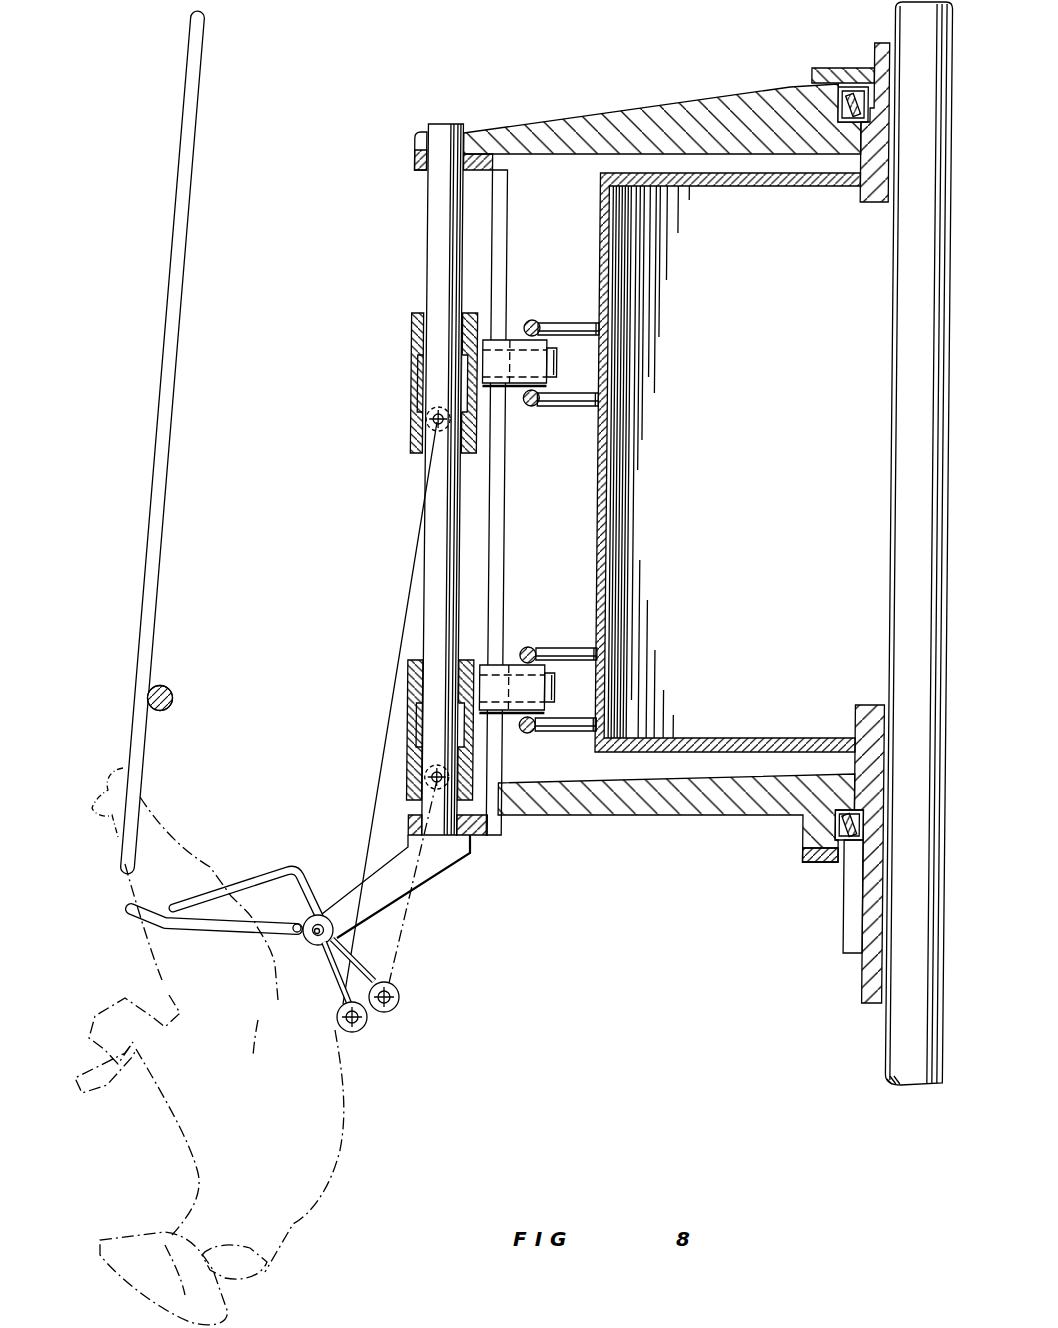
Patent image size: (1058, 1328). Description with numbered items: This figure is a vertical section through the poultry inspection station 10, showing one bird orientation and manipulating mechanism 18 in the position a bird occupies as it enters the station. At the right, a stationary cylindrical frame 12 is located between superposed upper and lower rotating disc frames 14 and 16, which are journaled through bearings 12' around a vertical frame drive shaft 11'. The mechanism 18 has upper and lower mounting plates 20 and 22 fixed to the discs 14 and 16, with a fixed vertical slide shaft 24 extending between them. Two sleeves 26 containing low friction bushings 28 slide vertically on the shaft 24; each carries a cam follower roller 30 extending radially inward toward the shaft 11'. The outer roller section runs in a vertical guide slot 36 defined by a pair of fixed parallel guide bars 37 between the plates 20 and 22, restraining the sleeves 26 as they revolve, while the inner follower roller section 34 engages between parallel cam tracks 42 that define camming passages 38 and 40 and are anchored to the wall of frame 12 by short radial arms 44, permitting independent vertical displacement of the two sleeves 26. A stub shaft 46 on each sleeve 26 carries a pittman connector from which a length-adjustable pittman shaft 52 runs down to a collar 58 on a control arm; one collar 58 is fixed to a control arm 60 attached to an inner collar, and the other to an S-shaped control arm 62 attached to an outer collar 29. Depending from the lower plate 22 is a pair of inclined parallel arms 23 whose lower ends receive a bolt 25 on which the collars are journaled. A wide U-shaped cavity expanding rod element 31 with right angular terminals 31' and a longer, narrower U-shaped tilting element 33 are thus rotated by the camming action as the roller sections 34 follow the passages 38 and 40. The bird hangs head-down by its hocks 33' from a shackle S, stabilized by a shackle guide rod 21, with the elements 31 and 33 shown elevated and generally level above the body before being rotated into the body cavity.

The poultry inspection station 10 is at (628, 92).
The frame drive shaft 11' is at (903, 543).
The stationary cylindrical frame 12 is at (709, 462).
The bearings 12' is at (821, 450).
The upper rotating disc frame 14 is at (726, 96).
The lower rotating disc frame 16 is at (650, 814).
The bird orientation and manipulating mechanism 18 is at (426, 626).
The upper mounting plate 20 is at (414, 168).
The shackle guide rod 21 is at (172, 694).
The lower mounting plate 22 is at (474, 835).
The inclined parallel arms 23 is at (370, 876).
The vertical slide shaft 24 is at (432, 540).
The bolt 25 is at (276, 968).
The sleeve 26 is at (412, 343).
The low friction bushing 28 is at (421, 313).
The outer collar 29 is at (332, 922).
The cam follower roller 30 is at (557, 364).
The bird body cavity expanding rod element 31 is at (246, 882).
The right angular terminals 31' is at (311, 854).
The bird orientation or tilting element 33 is at (214, 933).
The hocks 33' is at (97, 793).
The inner follower roller section 34 is at (517, 342).
The vertical guide slot 36 is at (506, 572).
The guide bars 37 is at (504, 254).
The camming passage 38 is at (513, 398).
The camming passage 40 is at (512, 660).
The cam tracks 42 is at (538, 324).
The short radial arms 44 is at (576, 324).
The stub shaft 46 is at (430, 440).
The pittman shaft 52 is at (410, 596).
The collar 58 is at (380, 1012).
The control arm 60 is at (338, 1010).
The control arm 62 is at (390, 975).
The poultry suspension shackle S is at (163, 507).